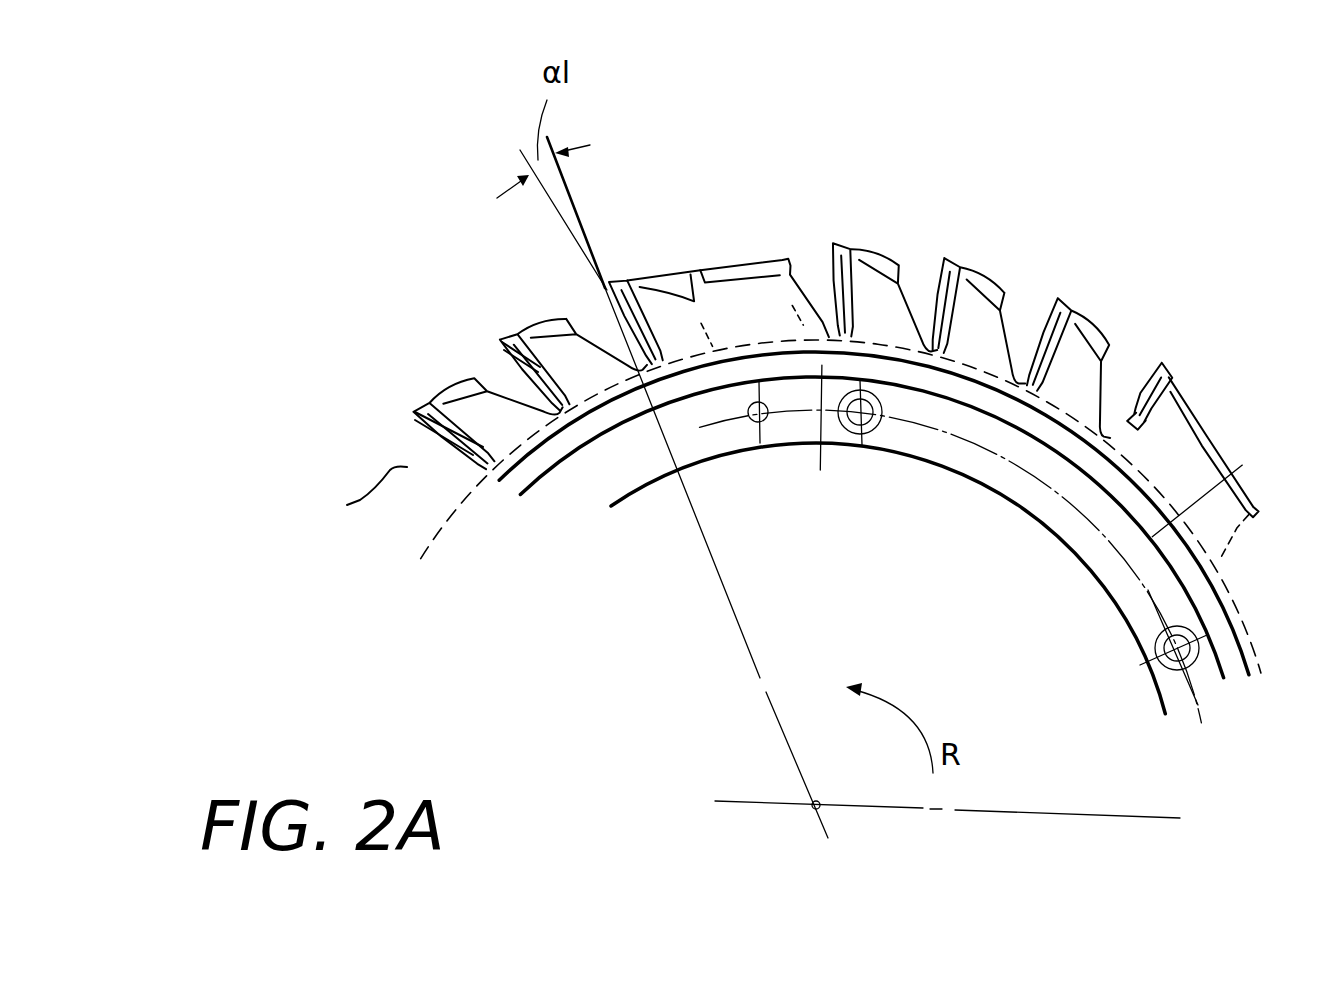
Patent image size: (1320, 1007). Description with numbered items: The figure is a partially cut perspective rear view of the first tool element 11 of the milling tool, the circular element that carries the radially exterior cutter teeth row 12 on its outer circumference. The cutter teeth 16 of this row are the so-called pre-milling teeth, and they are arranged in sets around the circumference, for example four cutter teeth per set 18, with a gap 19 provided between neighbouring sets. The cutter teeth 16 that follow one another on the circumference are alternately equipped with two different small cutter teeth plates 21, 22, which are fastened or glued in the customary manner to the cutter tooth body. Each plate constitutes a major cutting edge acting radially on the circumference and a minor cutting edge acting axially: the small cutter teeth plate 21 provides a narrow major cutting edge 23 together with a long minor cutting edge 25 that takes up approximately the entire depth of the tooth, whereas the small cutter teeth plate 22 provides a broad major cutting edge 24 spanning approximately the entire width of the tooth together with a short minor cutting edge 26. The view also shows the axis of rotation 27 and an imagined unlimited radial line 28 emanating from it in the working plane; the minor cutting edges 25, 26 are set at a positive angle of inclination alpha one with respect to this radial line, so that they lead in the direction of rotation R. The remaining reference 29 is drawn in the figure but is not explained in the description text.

The first tool element 11 is at (870, 196).
The radially exterior cutter teeth row 12 is at (984, 260).
The cutter teeth 16 is at (1088, 332).
The set 18 is at (1148, 328).
The gap 19 is at (740, 272).
The small cutter teeth plate 21 is at (398, 427).
The small cutter teeth plate 22 is at (494, 327).
The narrow major cutting edge 23 is at (415, 412).
The broad major cutting edge 24 is at (518, 338).
The long minor cutting edge 25 is at (417, 425).
The short minor cutting edge 26 is at (507, 357).
The axis of rotation 27 is at (820, 808).
The unlimited radial line 28 is at (712, 572).
The reference plane 29 is at (698, 731).